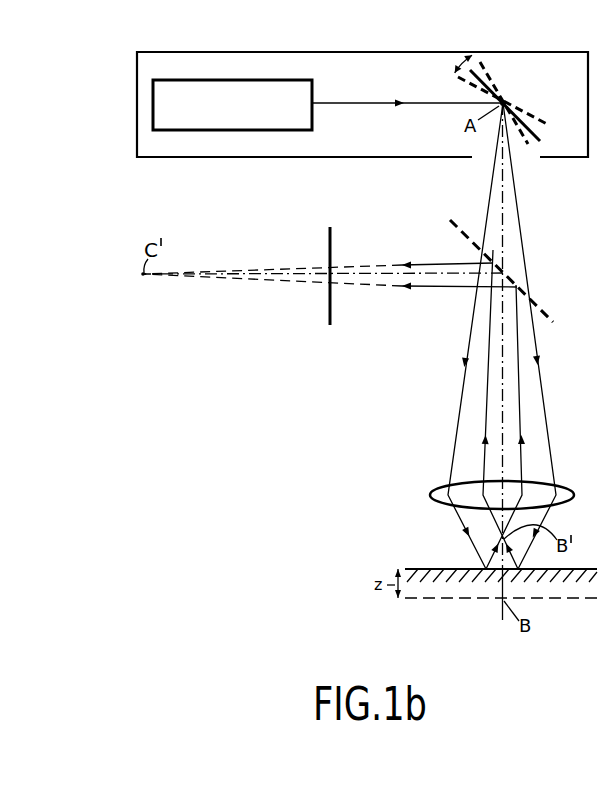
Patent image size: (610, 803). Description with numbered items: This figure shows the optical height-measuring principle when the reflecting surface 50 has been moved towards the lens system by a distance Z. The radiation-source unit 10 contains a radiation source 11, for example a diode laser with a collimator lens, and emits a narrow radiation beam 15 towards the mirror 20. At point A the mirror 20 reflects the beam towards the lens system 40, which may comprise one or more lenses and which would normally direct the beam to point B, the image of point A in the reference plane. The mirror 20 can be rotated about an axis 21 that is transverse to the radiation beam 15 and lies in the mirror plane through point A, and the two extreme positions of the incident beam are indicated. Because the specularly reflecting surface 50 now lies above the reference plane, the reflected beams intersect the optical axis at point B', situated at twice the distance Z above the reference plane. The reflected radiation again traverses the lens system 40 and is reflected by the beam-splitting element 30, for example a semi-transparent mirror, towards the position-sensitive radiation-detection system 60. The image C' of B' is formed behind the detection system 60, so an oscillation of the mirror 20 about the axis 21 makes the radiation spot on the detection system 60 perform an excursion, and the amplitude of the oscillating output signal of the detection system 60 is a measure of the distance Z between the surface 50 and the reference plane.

The radiation-source unit 10 is at (237, 52).
The radiation source 11 is at (238, 80).
The radiation beam 15 is at (418, 102).
The mirror 20 is at (541, 120).
The axis 21 is at (507, 101).
The beam-splitting element 30 is at (556, 323).
The lens system 40 is at (566, 488).
The reflecting surface 50 is at (447, 568).
The position-sensitive radiation-detection system 60 is at (332, 322).